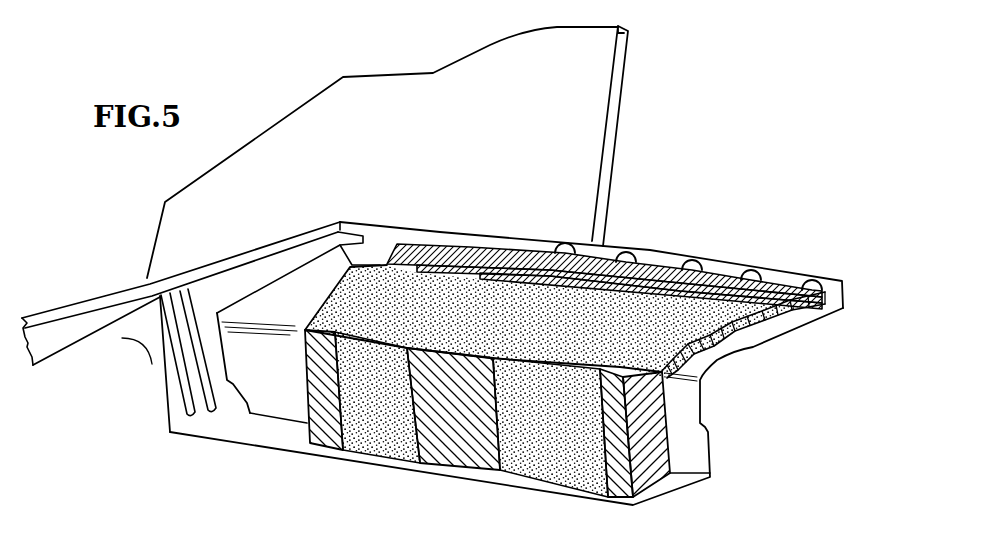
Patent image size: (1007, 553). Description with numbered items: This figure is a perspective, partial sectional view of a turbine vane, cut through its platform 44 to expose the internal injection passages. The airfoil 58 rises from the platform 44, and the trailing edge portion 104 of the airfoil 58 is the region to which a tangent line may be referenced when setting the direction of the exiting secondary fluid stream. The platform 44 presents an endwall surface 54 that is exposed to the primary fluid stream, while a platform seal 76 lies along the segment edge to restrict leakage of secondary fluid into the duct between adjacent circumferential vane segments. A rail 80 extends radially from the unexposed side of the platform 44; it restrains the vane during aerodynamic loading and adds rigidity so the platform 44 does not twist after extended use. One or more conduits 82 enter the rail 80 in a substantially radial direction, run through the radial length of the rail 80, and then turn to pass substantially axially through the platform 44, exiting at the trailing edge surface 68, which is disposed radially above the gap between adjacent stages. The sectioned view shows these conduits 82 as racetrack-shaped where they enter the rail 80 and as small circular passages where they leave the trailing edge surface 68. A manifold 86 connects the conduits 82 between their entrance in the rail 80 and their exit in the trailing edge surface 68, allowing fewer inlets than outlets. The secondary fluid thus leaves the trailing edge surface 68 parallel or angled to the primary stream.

The platform 44 is at (149, 334).
The endwall surface 54 is at (291, 238).
The airfoil 58 is at (457, 150).
The trailing edge surface 68 is at (842, 278).
The platform seal 76 is at (97, 310).
The rail 80 is at (153, 388).
The conduit 82 is at (698, 263).
The manifold 86 is at (547, 341).
The trailing edge portion 104 is at (611, 138).